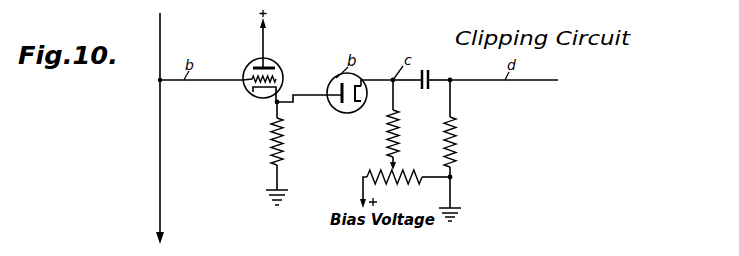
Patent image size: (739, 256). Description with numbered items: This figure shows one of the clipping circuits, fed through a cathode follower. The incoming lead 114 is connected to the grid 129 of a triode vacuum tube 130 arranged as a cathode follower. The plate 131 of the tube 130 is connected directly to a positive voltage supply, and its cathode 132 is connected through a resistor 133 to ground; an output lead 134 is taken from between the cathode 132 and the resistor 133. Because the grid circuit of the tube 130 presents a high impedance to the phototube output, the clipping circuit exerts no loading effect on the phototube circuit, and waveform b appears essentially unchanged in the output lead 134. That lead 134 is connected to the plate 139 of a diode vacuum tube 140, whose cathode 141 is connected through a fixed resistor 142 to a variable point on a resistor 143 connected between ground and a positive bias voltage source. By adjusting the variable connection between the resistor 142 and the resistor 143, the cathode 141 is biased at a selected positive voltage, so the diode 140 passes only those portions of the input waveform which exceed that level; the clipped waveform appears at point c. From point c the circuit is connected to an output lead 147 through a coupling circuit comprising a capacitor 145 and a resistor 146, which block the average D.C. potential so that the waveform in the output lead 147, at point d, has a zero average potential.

The lead 114 is at (174, 128).
The grid 129 is at (249, 72).
The triode vacuum tube 130 is at (283, 39).
The plate 131 is at (286, 69).
The cathode 132 is at (256, 104).
The resistor 133 is at (270, 139).
The output lead 134 is at (309, 78).
The plate 139 is at (329, 96).
The diode vacuum tube 140 is at (345, 114).
The cathode 141 is at (374, 111).
The fixed resistor 142 is at (413, 125).
The resistor 143 is at (398, 179).
The capacitor 145 is at (431, 71).
The resistor 146 is at (476, 149).
The output lead 147 is at (506, 94).